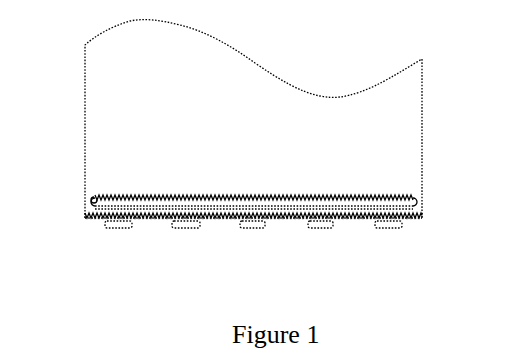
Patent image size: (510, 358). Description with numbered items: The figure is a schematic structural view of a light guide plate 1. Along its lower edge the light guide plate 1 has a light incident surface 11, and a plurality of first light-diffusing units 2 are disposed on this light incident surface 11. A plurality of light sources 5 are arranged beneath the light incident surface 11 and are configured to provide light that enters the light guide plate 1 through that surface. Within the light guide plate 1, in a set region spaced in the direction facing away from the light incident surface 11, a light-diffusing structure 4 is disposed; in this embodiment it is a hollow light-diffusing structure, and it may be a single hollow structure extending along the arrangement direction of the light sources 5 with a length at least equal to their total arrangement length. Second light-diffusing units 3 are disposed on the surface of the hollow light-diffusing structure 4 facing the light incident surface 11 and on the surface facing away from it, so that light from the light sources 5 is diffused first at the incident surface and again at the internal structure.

The light guide plate 1 is at (402, 155).
The first light-diffusing unit 2 is at (287, 216).
The second light-diffusing unit 3 is at (196, 197).
The light-diffusing structure 4 is at (94, 201).
The light source 5 is at (118, 229).
The light incident surface 11 is at (222, 216).